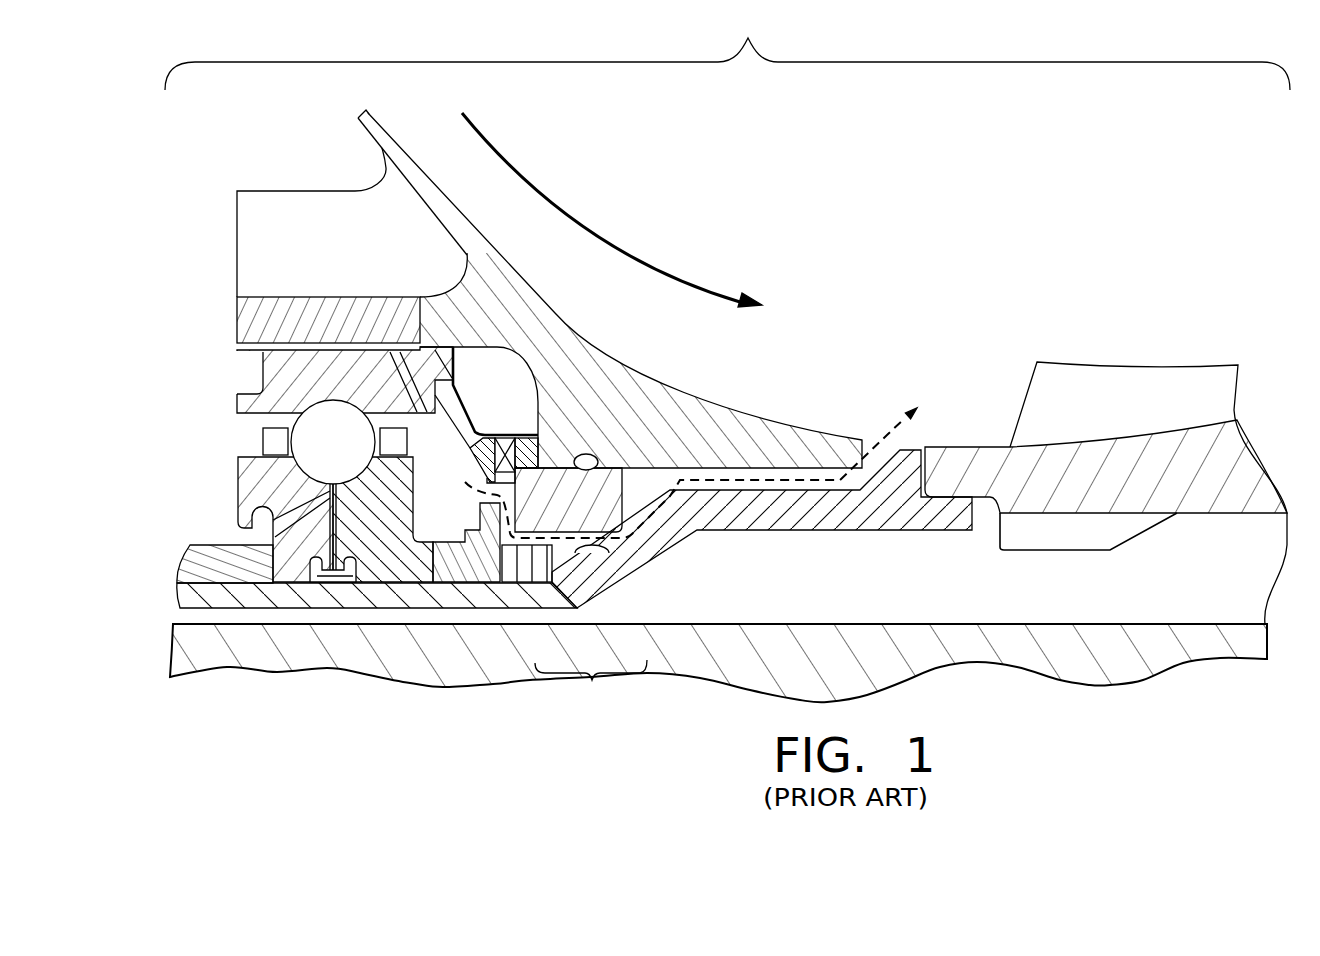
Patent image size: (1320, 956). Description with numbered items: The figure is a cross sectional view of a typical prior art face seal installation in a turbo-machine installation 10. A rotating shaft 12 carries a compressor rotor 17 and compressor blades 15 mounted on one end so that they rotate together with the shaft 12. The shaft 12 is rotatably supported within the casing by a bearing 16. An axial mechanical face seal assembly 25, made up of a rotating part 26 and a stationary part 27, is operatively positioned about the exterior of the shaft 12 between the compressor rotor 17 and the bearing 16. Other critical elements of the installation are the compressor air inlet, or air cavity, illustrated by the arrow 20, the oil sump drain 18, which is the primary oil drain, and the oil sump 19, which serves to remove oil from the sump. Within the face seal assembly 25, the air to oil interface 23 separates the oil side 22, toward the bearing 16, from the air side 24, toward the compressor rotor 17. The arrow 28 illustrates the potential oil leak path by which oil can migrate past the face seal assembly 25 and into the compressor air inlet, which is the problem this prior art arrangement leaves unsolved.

The turbo-machine installation 10 is at (747, 40).
The rotating shaft 12 is at (278, 597).
The compressor blades 15 is at (1107, 388).
The bearing 16 is at (327, 443).
The compressor rotor 17 is at (1142, 477).
The oil sump drain 18 is at (348, 220).
The oil sump 19 is at (202, 320).
The compressor air inlet 20 is at (613, 238).
The oil side 22 is at (437, 518).
The air to oil interface 23 is at (457, 492).
The air side 24 is at (594, 556).
The axial mechanical face seal assembly 25 is at (605, 697).
The rotating part 26 is at (485, 566).
The stationary part 27 is at (572, 523).
The oil leak path 28 is at (760, 482).